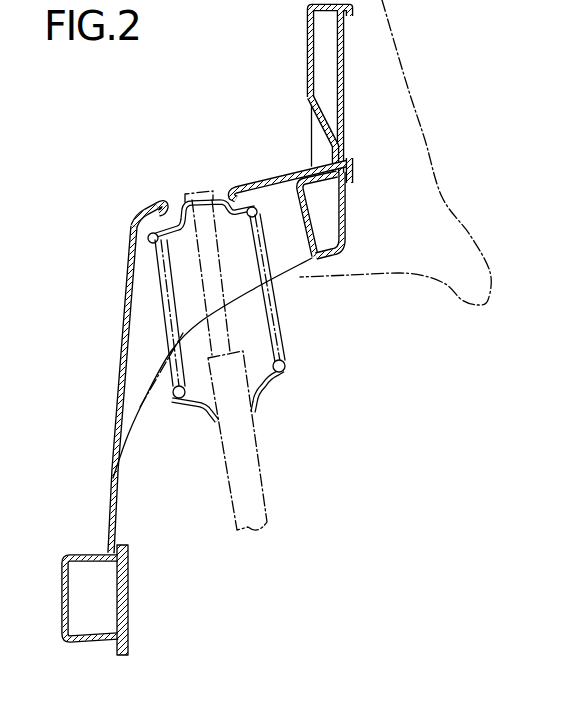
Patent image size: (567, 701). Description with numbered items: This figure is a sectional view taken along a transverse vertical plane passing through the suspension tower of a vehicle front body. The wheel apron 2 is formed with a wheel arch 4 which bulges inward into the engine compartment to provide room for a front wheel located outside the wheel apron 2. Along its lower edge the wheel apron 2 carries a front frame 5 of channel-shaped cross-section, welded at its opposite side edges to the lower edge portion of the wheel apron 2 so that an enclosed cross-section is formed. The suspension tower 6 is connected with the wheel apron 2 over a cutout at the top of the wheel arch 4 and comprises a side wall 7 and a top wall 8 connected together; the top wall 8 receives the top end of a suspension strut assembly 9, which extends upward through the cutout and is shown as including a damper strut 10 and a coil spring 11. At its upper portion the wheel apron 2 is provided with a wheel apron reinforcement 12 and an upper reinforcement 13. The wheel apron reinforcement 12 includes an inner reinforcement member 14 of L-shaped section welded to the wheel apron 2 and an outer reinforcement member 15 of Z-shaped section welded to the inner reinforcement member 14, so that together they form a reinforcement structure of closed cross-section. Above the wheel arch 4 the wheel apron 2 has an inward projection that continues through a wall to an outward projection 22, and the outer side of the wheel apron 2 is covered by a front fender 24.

The wheel apron 2 is at (308, 33).
The upper reinforcement 13 is at (343, 88).
The outward projection 22 is at (320, 138).
The wheel apron reinforcement 12 is at (334, 262).
The inner reinforcement member 14 is at (318, 209).
The outer reinforcement member 15 is at (345, 243).
The front fender 24 is at (437, 172).
The suspension tower 6 is at (146, 198).
The top wall 8 is at (130, 237).
The side wall 7 is at (128, 313).
The front frame 5 is at (63, 591).
The wheel arch 4 is at (140, 405).
The suspension strut assembly 9 is at (281, 389).
The coil spring 11 is at (272, 297).
The damper strut 10 is at (264, 467).